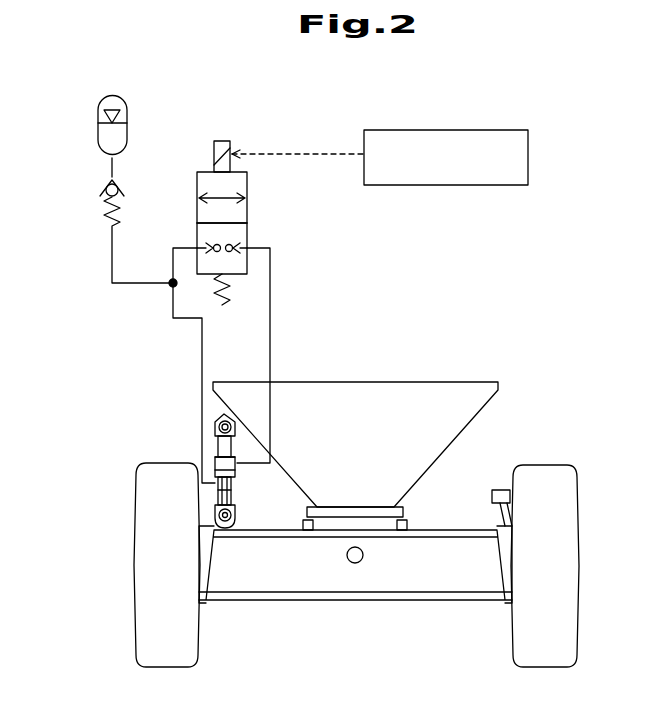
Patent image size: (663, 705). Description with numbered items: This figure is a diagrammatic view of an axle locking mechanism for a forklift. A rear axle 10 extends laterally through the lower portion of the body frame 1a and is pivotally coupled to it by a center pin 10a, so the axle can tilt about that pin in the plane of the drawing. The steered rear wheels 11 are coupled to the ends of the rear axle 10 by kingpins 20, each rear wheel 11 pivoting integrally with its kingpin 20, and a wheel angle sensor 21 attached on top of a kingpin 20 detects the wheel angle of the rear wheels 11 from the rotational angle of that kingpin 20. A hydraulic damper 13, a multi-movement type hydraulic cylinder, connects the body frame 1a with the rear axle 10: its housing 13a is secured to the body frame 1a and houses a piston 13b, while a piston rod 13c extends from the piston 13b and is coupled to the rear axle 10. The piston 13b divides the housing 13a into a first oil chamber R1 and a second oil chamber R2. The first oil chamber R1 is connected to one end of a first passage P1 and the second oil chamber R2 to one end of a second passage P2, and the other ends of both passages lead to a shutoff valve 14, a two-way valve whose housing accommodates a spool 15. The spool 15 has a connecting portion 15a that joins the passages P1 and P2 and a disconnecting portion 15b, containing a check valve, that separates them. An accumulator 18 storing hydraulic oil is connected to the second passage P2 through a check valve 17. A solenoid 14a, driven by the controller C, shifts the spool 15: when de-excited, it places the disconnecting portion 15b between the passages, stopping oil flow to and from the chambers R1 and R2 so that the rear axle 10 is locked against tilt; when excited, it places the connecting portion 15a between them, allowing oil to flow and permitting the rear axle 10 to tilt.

The accumulator 18 is at (98, 112).
The check valve 17 is at (100, 187).
The shutoff valve 14 is at (236, 229).
The solenoid 14a is at (221, 141).
The spool 15 is at (246, 178).
The connecting portion 15a is at (244, 210).
The disconnecting portion 15b is at (244, 230).
The controller C is at (452, 130).
The first passage P1 is at (271, 340).
The second passage P2 is at (202, 399).
The body frame 1a is at (478, 412).
The hydraulic damper 13 is at (241, 482).
The housing 13a is at (234, 489).
The piston 13b is at (237, 472).
The piston rod 13c is at (235, 522).
The first oil chamber R1 is at (214, 460).
The second oil chamber R2 is at (216, 490).
The rear axle 10 is at (355, 586).
The center pin 10a is at (364, 555).
The kingpin 20 is at (211, 575).
The rear wheel 11 is at (138, 642).
The wheel angle sensor 21 is at (492, 497).